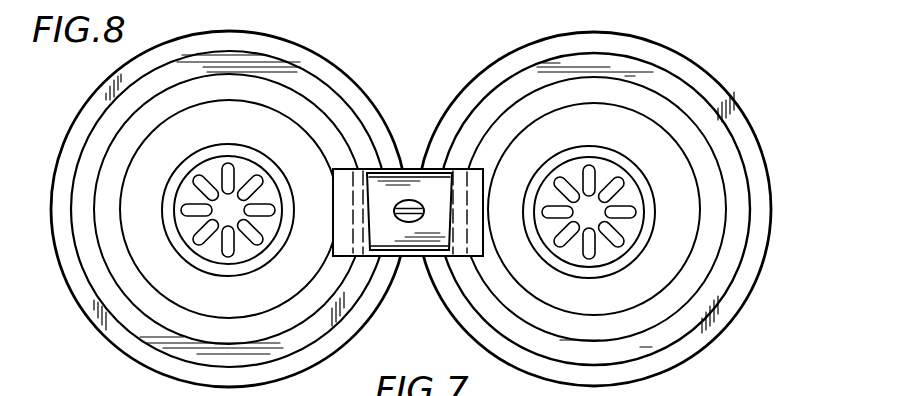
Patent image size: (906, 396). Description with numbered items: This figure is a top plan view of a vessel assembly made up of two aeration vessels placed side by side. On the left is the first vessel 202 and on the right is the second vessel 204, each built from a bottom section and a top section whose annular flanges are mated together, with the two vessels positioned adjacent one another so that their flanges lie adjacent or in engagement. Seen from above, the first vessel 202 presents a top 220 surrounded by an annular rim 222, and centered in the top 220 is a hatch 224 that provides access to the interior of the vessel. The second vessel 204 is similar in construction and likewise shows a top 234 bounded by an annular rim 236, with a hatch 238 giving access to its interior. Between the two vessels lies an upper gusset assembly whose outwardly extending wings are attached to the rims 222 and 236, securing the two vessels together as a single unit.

The first vessel 202 is at (75, 320).
The second vessel 204 is at (745, 102).
The top 220 is at (145, 166).
The annular rim 222 is at (178, 320).
The hatch 224 is at (233, 177).
The top 234 is at (667, 263).
The annular rim 236 is at (670, 302).
The hatch 238 is at (590, 173).